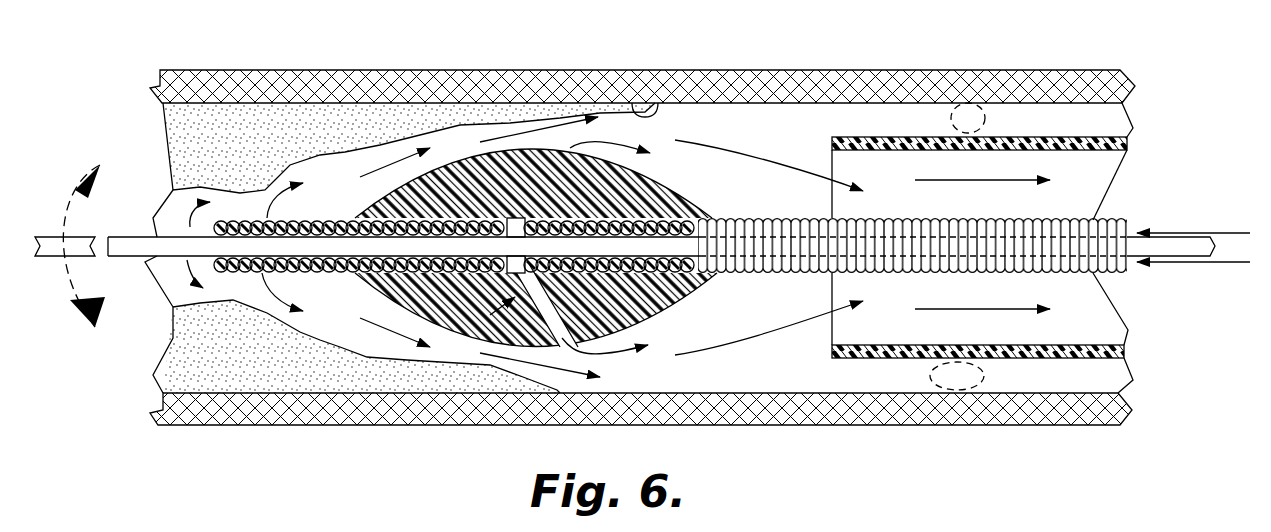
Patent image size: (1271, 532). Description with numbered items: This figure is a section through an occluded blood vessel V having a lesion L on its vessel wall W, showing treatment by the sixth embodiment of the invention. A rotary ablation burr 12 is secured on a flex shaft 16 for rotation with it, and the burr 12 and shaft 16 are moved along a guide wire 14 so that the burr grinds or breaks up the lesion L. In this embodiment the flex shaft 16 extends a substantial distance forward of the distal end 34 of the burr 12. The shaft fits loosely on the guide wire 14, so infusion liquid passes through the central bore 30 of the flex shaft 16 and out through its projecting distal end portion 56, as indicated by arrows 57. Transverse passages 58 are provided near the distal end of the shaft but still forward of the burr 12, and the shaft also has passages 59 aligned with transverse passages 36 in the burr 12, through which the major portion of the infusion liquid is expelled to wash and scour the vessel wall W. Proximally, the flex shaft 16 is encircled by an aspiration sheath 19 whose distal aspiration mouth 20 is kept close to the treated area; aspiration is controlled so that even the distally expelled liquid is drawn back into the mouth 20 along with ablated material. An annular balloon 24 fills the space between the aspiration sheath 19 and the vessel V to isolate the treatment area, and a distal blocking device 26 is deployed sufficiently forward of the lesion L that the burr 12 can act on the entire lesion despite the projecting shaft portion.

The rotary ablation burr 12 is at (428, 195).
The guide wire 14 is at (143, 262).
The flex shaft 16 is at (1087, 230).
The aspiration sheath 19 is at (877, 137).
The aspiration mouth 20 is at (832, 340).
The annular balloon 24 is at (963, 117).
The distal blocking device 26 is at (83, 160).
The central bore 30 is at (672, 224).
The distal end of the burr 34 is at (360, 216).
The transverse passages 36 is at (405, 447).
The projecting distal end portion 56 is at (330, 217).
The arrows 57 is at (193, 266).
The transverse passages of the shaft 58 is at (268, 220).
The shaft passages 59 is at (515, 220).
The lesion L is at (258, 128).
The blood vessel V is at (603, 71).
The vessel wall W is at (660, 70).